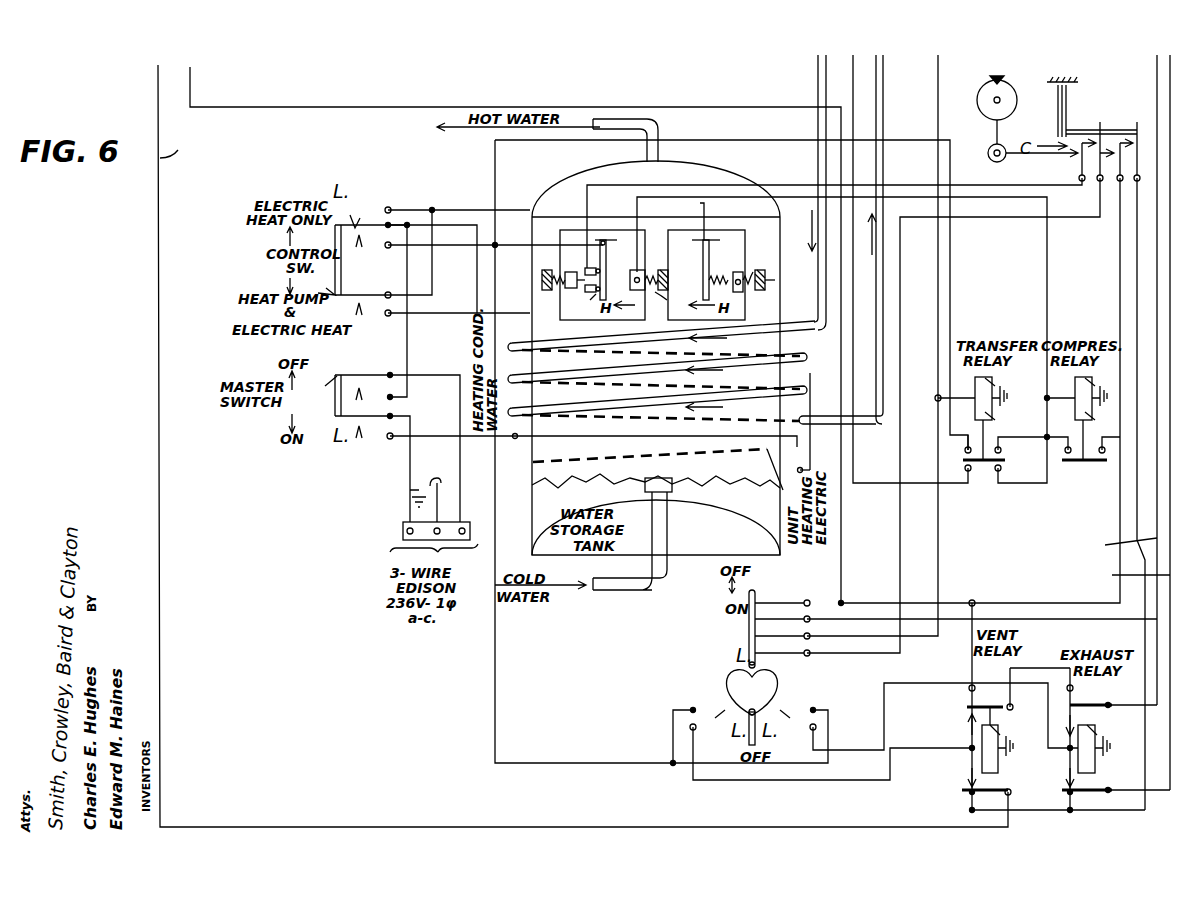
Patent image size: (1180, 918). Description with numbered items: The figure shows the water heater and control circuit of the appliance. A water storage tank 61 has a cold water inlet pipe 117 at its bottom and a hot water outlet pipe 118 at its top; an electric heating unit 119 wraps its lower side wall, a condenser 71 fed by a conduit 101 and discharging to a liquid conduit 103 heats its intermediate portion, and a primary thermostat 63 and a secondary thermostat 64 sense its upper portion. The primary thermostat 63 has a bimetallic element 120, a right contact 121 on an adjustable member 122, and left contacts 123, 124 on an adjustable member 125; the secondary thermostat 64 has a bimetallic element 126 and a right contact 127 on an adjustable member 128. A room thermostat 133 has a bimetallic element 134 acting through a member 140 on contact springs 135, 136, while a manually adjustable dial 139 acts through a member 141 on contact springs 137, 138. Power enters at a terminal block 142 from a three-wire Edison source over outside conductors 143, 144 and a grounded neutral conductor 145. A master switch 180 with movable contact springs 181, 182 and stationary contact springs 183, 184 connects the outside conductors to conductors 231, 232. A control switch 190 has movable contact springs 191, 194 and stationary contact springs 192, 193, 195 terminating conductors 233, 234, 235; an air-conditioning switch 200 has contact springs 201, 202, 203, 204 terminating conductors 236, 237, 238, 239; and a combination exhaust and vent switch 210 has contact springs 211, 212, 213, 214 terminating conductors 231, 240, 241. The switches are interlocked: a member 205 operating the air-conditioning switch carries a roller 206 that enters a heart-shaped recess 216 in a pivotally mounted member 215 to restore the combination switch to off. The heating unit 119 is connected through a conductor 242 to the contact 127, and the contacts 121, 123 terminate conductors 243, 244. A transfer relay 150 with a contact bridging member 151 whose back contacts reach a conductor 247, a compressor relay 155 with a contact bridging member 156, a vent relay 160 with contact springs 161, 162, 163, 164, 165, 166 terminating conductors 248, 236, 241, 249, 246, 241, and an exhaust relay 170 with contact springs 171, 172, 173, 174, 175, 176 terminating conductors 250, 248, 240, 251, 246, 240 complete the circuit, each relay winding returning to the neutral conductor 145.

The water storage tank 61 is at (766, 509).
The primary thermostat 63 is at (560, 264).
The secondary thermostat 64 is at (735, 262).
The condenser 71 is at (571, 400).
The conduit 101 is at (818, 80).
The liquid conduit 103 is at (880, 79).
The cold water inlet pipe 117 is at (600, 593).
The hot water outlet pipe 118 is at (634, 122).
The electric heating unit 119 is at (573, 458).
The bimetallic element 120 is at (600, 272).
The right contact 121 is at (648, 262).
The adjustable member 122 is at (680, 298).
The left contact 123 is at (588, 270).
The left contact 124 is at (590, 302).
The adjustable member 125 is at (542, 282).
The bimetallic element 126 is at (703, 272).
The right contact 127 is at (740, 274).
The adjustable member 128 is at (773, 280).
The room thermostat 133 is at (1087, 75).
The bimetallic element 134 is at (1066, 116).
The contact spring 135 is at (1152, 472).
The contact spring 136 is at (1115, 162).
The contact spring 137 is at (1134, 159).
The contact spring 138 is at (1097, 162).
The manually adjustable dial 139 is at (1016, 98).
The member 140 is at (1104, 128).
The member 141 is at (1028, 165).
The terminal block 142 is at (402, 535).
The outside ungrounded conductor 143 is at (460, 496).
The outside ungrounded conductor 144 is at (409, 490).
The grounded neutral conductor 145 is at (786, 571).
The transfer relay 150 is at (992, 418).
The contact bridging member 151 is at (1005, 462).
The compressor relay 155 is at (1088, 418).
The contact bridging member 156 is at (1072, 473).
The vent relay 160 is at (1010, 740).
The movable contact spring 161 is at (991, 696).
The back contact spring 162 is at (969, 691).
The front contact spring 163 is at (968, 725).
The movable contact spring 164 is at (990, 793).
The back contact spring 165 is at (968, 795).
The front contact spring 166 is at (971, 779).
The exhaust relay 170 is at (1092, 740).
The movable contact spring 171 is at (1076, 702).
The back contact spring 172 is at (1068, 694).
The front contact spring 173 is at (1066, 716).
The movable contact spring 174 is at (1095, 792).
The back contact spring 175 is at (1070, 799).
The front contact spring 176 is at (1070, 781).
The master switch 180 is at (310, 402).
The movable contact spring 181 is at (390, 373).
The movable contact spring 182 is at (383, 460).
The stationary contact spring 183 is at (376, 396).
The stationary contact spring 184 is at (376, 435).
The control switch 190 is at (304, 260).
The movable contact spring 191 is at (373, 225).
The stationary contact spring 192 is at (374, 202).
The stationary contact spring 193 is at (376, 244).
The movable contact spring 194 is at (374, 286).
The stationary contact spring 195 is at (376, 313).
The air-conditioning switch 200 is at (721, 653).
The movable contact spring 201 is at (790, 595).
The stationary contact spring 202 is at (790, 612).
The movable contact spring 203 is at (790, 629).
The stationary contact spring 204 is at (790, 646).
The member 205 is at (750, 635).
The roller 206 is at (768, 666).
The combination exhaust and vent switch 210 is at (750, 765).
The movable contact spring 211 is at (720, 698).
The stationary contact spring 212 is at (831, 752).
The movable contact spring 213 is at (824, 700).
The stationary contact spring 214 is at (928, 717).
The pivotally mounted member 215 is at (804, 683).
The heart-shaped recess 216 is at (752, 707).
The conductor 231 is at (408, 331).
The conductor 232 is at (484, 438).
The conductor 233 is at (484, 211).
The conductor 234 is at (476, 246).
The conductor 235 is at (484, 315).
The conductor 236 is at (242, 104).
The conductor 237 is at (1122, 252).
The conductor 238 is at (938, 90).
The conductor 239 is at (1010, 208).
The conductor 240 is at (811, 782).
The conductor 241 is at (881, 749).
The conductor 242 is at (838, 379).
The conductor 243 is at (637, 197).
The conductor 244 is at (694, 184).
The conductor 246 is at (1139, 240).
The conductor 247 is at (854, 120).
The conductor 248 is at (1034, 660).
The conductor 249 is at (1020, 827).
The conductor 250 is at (1108, 546).
The conductor 251 is at (1112, 575).